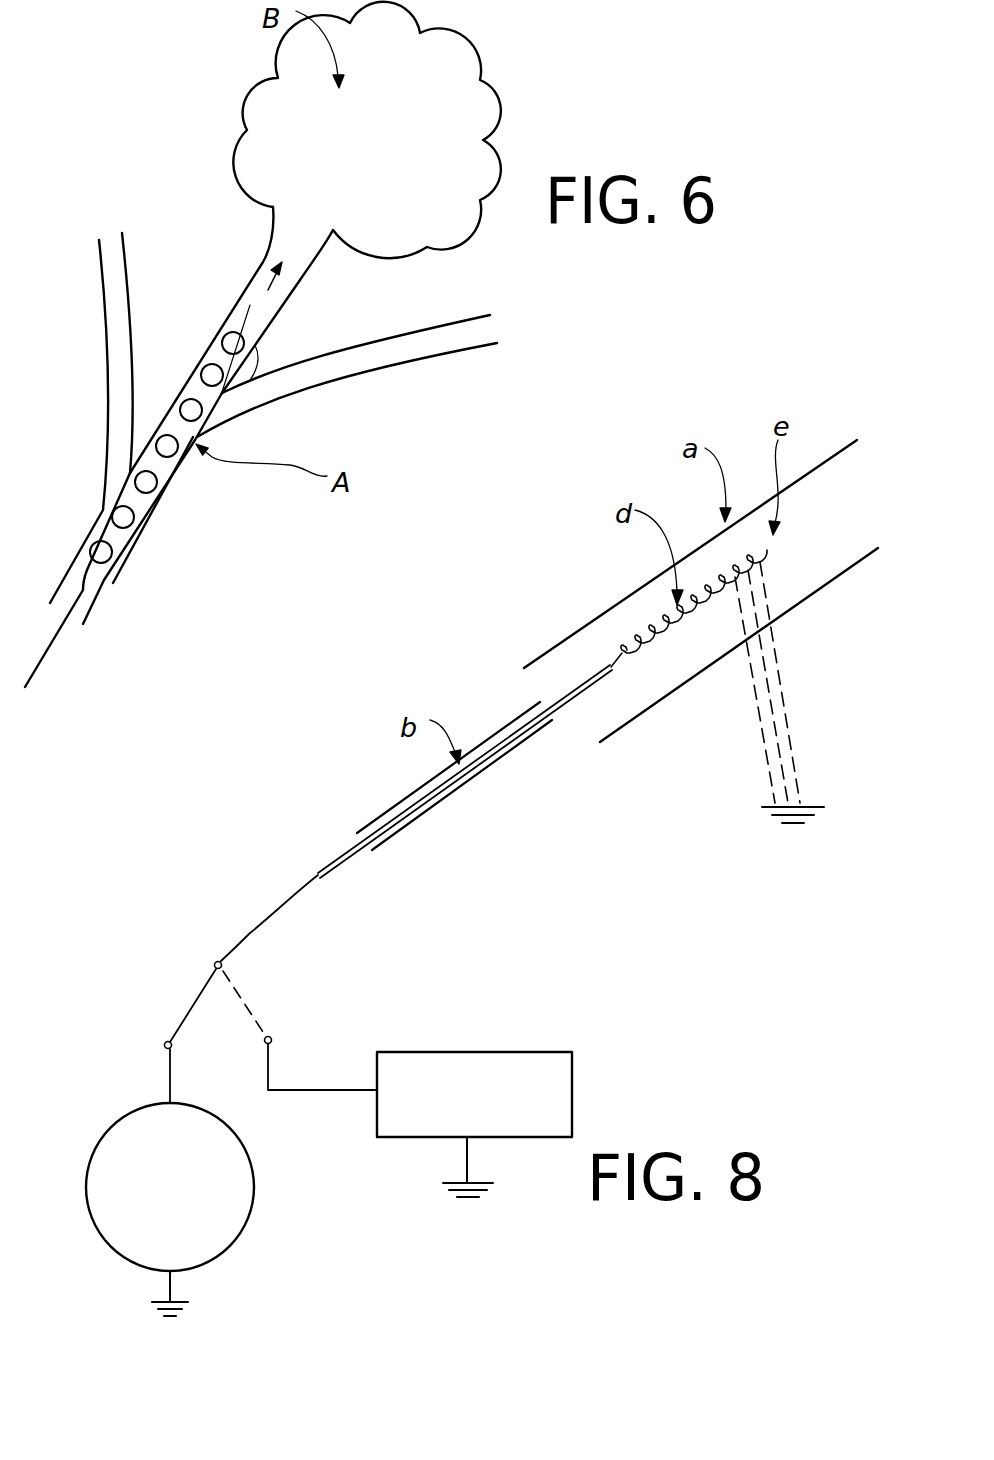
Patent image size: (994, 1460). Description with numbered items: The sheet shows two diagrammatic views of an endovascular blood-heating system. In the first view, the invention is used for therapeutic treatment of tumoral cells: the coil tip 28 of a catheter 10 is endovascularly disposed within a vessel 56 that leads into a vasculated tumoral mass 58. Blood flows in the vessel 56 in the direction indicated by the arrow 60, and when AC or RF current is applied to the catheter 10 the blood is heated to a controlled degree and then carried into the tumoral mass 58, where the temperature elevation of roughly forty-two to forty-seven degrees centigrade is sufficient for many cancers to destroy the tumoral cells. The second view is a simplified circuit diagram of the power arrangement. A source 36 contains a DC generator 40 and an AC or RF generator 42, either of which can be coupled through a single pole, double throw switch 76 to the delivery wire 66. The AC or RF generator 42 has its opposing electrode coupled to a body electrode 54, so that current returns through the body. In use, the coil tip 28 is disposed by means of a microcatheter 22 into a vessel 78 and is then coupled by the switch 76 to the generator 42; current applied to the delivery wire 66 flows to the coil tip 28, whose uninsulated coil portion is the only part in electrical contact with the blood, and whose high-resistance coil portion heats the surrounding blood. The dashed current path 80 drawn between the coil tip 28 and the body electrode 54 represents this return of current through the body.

In FIG. 6, the catheter 10 is at (83, 662).
In FIG. 6, the coil tip 28 is at (206, 449).
In FIG. 6, the vessel 56 is at (200, 355).
In FIG. 6, the tumoral mass 58 is at (488, 136).
In FIG. 6, the arrow 60 is at (283, 283).
In FIG. 8, the microcatheter 22 is at (477, 773).
In FIG. 8, the source 36 is at (583, 1032).
In FIG. 8, the DC generator 40 is at (572, 1093).
In FIG. 8, the AC or RF generator 42 is at (252, 1160).
In FIG. 8, the body electrode 54 is at (193, 1307).
In FIG. 8, the delivery wire 66 is at (300, 887).
In FIG. 8, the single pole, double throw switch 76 is at (247, 1000).
In FIG. 8, the vessel 78 is at (674, 693).
In FIG. 8, the current path 80 is at (782, 692).